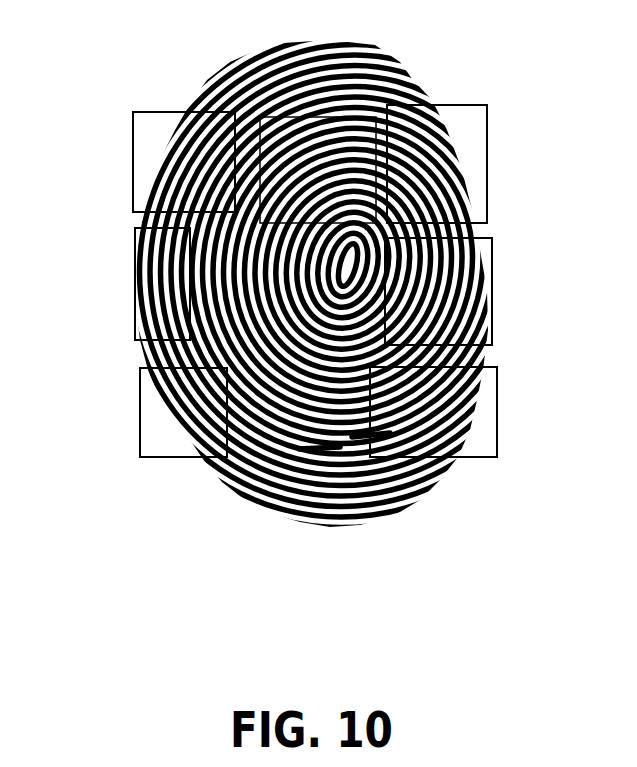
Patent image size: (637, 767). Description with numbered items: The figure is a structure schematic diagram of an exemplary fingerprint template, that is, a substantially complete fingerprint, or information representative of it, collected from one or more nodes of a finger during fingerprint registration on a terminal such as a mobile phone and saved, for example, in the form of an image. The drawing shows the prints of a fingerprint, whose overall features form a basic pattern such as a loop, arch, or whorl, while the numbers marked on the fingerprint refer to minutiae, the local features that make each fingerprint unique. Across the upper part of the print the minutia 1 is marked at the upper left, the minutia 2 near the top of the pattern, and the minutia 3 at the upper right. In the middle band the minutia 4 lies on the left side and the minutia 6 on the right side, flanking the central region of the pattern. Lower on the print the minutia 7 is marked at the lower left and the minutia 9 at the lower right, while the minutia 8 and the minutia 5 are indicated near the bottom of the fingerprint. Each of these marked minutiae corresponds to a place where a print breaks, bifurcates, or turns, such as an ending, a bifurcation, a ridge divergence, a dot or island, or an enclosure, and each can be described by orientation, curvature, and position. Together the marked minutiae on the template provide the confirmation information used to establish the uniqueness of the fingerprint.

The minutia 1 is at (133, 170).
The minutia 2 is at (313, 100).
The minutia 3 is at (487, 162).
The minutia 4 is at (135, 293).
The minutia 5 is at (370, 436).
The minutia 6 is at (492, 296).
The minutia 7 is at (140, 411).
The minutia 8 is at (320, 448).
The minutia 9 is at (497, 422).